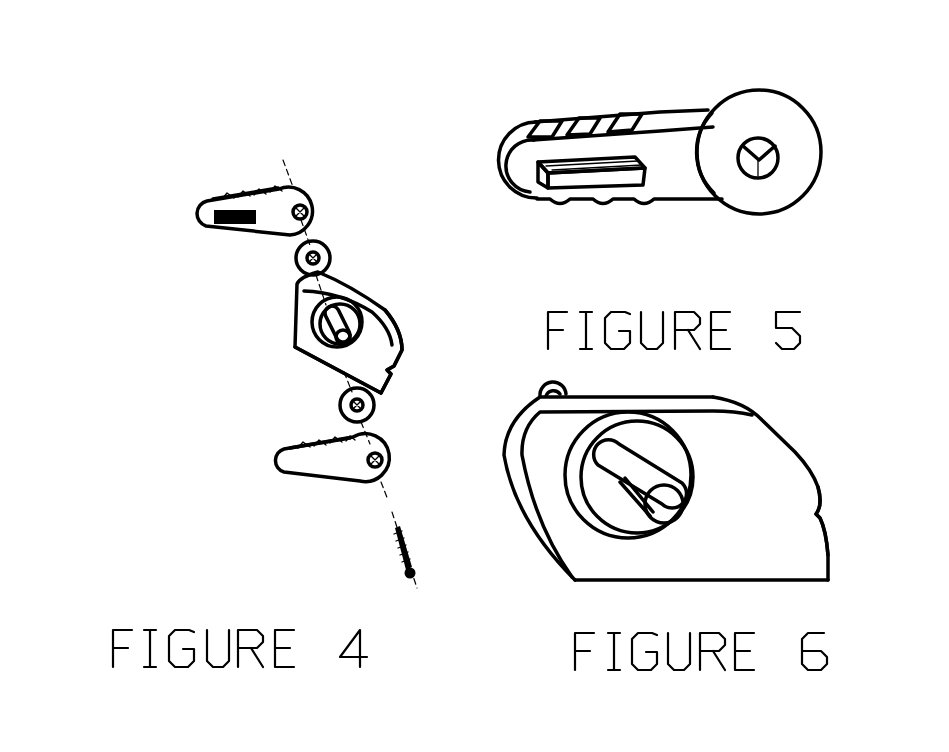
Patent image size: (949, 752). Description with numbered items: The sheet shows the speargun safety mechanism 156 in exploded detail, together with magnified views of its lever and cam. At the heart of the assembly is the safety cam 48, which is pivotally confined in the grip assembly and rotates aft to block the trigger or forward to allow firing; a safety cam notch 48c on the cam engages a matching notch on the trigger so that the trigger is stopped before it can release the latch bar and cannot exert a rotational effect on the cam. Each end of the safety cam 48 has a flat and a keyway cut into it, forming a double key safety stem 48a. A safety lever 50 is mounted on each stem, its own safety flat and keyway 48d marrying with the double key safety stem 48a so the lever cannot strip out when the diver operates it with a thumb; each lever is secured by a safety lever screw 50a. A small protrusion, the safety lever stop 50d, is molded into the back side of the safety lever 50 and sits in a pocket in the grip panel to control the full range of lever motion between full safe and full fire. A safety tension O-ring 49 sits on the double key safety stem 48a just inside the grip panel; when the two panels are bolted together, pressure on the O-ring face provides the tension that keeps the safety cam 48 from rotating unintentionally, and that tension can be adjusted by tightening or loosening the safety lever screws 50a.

In FIG. 4, the safety cam 48 is at (292, 322).
In FIG. 6, the safety cam 48 is at (787, 585).
In FIG. 4, the double key safety stem 48a is at (337, 325).
In FIG. 6, the double key safety stem 48a is at (686, 493).
In FIG. 4, the safety cam notch 48c is at (391, 372).
In FIG. 6, the safety cam notch 48c is at (819, 516).
In FIG. 5, the safety flat and keyway 48d is at (775, 165).
In FIG. 4, the safety tension O-ring 49 is at (296, 258).
In FIG. 4, the safety lever 50 is at (197, 210).
In FIG. 5, the safety lever 50 is at (757, 221).
In FIG. 4, the safety lever screw 50a is at (400, 571).
In FIG. 4, the safety lever stop 50d is at (215, 222).
In FIG. 5, the safety lever stop 50d is at (591, 172).
In FIG. 4, the safety mechanism 156 is at (314, 369).